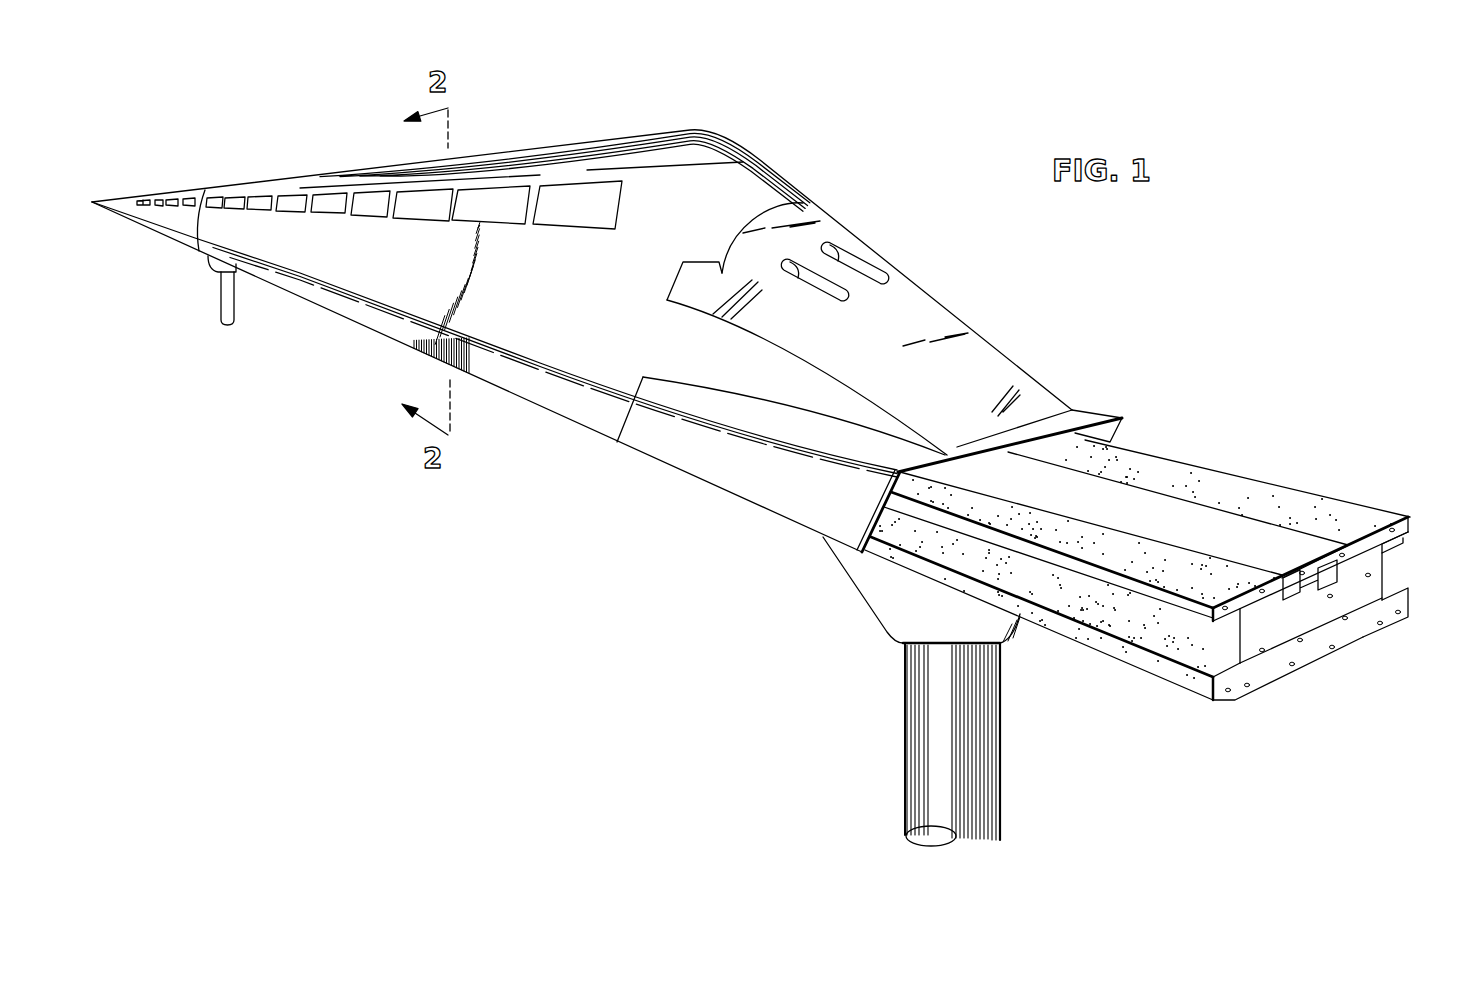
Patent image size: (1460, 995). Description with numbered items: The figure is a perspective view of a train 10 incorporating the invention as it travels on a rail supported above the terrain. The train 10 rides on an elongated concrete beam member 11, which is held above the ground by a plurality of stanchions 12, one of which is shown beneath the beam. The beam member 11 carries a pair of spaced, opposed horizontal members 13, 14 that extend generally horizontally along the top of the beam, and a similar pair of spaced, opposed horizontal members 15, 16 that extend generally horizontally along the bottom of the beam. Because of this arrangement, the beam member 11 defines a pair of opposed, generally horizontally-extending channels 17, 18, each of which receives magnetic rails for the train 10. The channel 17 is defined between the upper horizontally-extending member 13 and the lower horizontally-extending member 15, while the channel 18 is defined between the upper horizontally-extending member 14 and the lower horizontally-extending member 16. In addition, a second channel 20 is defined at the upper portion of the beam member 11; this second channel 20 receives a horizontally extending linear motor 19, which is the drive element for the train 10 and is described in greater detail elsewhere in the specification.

The train 10 is at (770, 130).
The elongated concrete beam member 11 is at (1237, 462).
The stanchion 12 is at (940, 686).
The upper horizontally-extending member 13 is at (990, 517).
The upper horizontally-extending member 14 is at (1150, 463).
The lower horizontally-extending member 15 is at (1237, 699).
The lower horizontally-extending member 16 is at (1391, 630).
The channel 17 is at (1196, 660).
The channel 18 is at (1398, 563).
The linear motor 19 is at (1275, 527).
The second channel 20 is at (1313, 594).